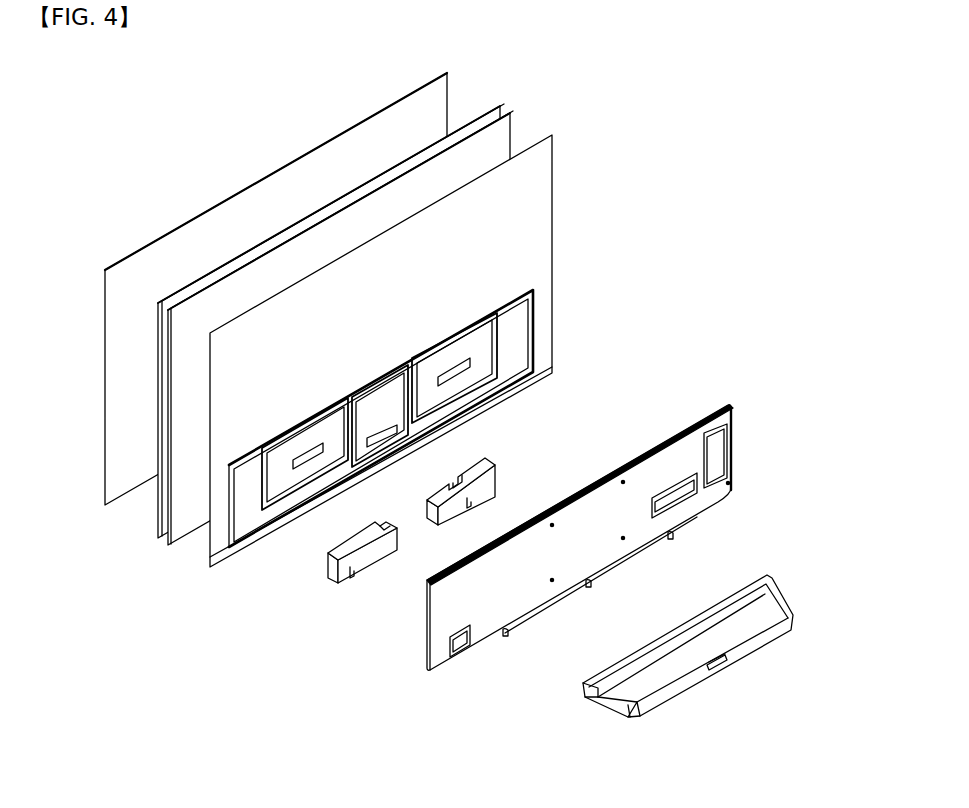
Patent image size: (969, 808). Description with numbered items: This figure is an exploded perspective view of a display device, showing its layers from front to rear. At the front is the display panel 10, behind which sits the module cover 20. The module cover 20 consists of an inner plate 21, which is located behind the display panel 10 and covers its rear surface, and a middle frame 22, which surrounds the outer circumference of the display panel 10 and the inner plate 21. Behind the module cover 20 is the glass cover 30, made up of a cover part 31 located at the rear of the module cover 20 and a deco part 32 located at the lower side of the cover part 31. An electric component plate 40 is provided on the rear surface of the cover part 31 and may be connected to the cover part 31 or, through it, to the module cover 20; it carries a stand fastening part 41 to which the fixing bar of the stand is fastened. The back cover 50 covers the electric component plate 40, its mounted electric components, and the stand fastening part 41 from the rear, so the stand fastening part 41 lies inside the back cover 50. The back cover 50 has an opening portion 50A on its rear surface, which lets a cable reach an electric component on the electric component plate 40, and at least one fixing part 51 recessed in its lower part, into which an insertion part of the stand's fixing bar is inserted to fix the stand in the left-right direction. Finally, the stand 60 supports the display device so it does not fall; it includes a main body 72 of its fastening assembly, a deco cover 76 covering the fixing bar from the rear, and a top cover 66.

The display panel 10 is at (171, 243).
The module cover 20 is at (329, 375).
The inner plate 21 is at (183, 546).
The middle frame 22 is at (153, 540).
The glass cover 30 is at (428, 351).
The cover part 31 is at (548, 343).
The deco part 32 is at (408, 454).
The electric component plate 40 is at (545, 307).
The stand fastening part 41 is at (488, 482).
The back cover 50 is at (629, 541).
The opening portion 50A is at (690, 500).
The fixing part 51 is at (507, 637).
The stand 60 is at (724, 644).
The top cover 66 is at (720, 641).
The main body 72 is at (663, 702).
The deco cover 76 is at (746, 595).